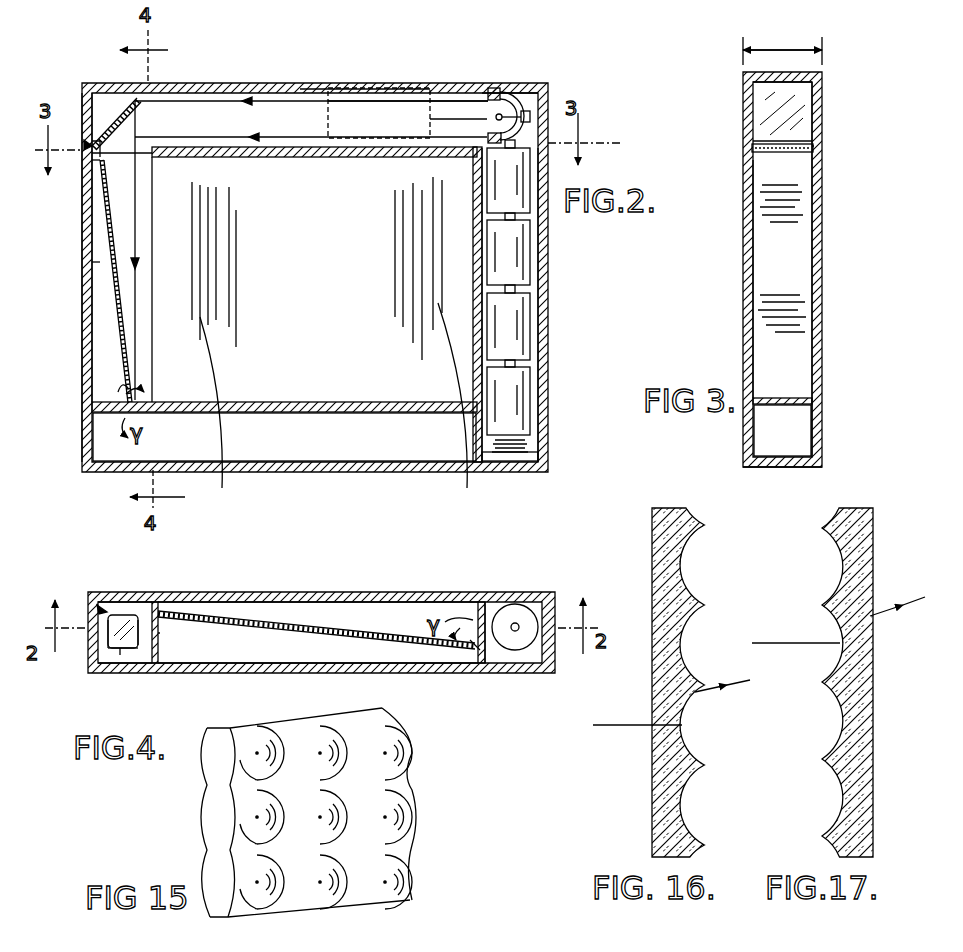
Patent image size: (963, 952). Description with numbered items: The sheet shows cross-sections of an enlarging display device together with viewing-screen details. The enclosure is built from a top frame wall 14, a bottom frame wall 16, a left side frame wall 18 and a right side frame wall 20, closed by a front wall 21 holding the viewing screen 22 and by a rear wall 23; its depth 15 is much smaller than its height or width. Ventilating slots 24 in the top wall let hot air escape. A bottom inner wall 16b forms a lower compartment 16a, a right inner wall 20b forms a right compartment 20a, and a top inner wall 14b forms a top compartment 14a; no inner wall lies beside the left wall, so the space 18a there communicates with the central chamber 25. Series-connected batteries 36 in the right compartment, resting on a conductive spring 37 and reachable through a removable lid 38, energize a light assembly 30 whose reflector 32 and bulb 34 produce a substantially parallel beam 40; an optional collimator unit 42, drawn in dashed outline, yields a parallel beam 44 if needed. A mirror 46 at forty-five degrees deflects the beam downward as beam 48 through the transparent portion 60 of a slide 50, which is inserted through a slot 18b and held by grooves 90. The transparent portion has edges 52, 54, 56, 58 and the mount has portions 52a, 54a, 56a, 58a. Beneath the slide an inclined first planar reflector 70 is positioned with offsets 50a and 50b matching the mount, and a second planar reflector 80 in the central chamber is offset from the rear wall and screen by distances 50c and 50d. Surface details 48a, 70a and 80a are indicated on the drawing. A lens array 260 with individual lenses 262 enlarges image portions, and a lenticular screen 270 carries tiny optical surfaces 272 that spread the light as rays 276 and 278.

In FIG. 2, the top frame wall 14 is at (393, 83).
In FIG. 3, the top frame wall 14 is at (820, 74).
In FIG. 2, the top elongated compartment 14a is at (313, 90).
In FIG. 2, the top inner wall 14b is at (225, 147).
In FIG. 3, the depth 15 is at (783, 48).
In FIG. 2, the bottom frame wall 16 is at (335, 462).
In FIG. 3, the bottom frame wall 16 is at (793, 458).
In FIG. 2, the lower elongated compartment 16a is at (368, 437).
In FIG. 3, the lower elongated compartment 16a is at (788, 433).
In FIG. 2, the bottom inner wall 16b is at (282, 412).
In FIG. 3, the bottom inner wall 16b is at (788, 405).
In FIG. 2, the left side frame wall 18 is at (88, 262).
In FIG. 2, the space adjacent left wall 18a is at (108, 322).
In FIG. 2, the slot 18b is at (82, 157).
In FIG. 3, the slot 18b is at (783, 141).
In FIG. 2, the right side frame wall 20 is at (536, 304).
In FIG. 2, the right compartment 20a is at (533, 362).
In FIG. 2, the right inner wall 20b is at (542, 270).
In FIG. 4, the right inner wall 20b is at (475, 617).
In FIG. 3, the front wall 21 is at (747, 105).
In FIG. 4, the front wall 21 is at (528, 660).
In FIG. 3, the viewing screen 22 is at (752, 302).
In FIG. 4, the viewing screen 22 is at (277, 664).
In FIG. 3, the rear wall 23 is at (815, 243).
In FIG. 4, the rear wall 23 is at (335, 596).
In FIG. 2, the air cooling slots 24 is at (510, 82).
In FIG. 4, the central chamber 25 is at (372, 613).
In FIG. 2, the light assembly 30 is at (519, 95).
In FIG. 2, the reflector 32 is at (522, 100).
In FIG. 2, the bulb 34 is at (496, 117).
In FIG. 2, the batteries 36 is at (508, 238).
In FIG. 4, the batteries 36 is at (515, 611).
In FIG. 2, the conductive spring 37 is at (535, 443).
In FIG. 2, the removable lid 38 is at (515, 463).
In FIG. 2, the parallel beam of light 40 is at (448, 120).
In FIG. 2, the collimator unit 42 is at (410, 100).
In FIG. 2, the parallel beam 44 is at (277, 123).
In FIG. 2, the mirror 46 is at (118, 143).
In FIG. 3, the mirror 46 is at (797, 122).
In FIG. 2, the reflected beam 48 is at (120, 147).
In FIG. 2, the support surface 48a is at (110, 270).
In FIG. 2, the slide 50 is at (80, 140).
In FIG. 3, the slide 50 is at (851, 171).
In FIG. 4, the slide 50 is at (104, 609).
In FIG. 2, the offset distance 50a is at (93, 187).
In FIG. 2, the lower offset distance 50b is at (122, 383).
In FIG. 4, the offset distance 50c is at (167, 599).
In FIG. 4, the offset distance 50d is at (475, 648).
In FIG. 4, the top edge of transparent portion 52 is at (91, 621).
In FIG. 4, the top mount portion 52a is at (250, 631).
In FIG. 4, the bottom edge of transparent portion 54 is at (142, 648).
In FIG. 4, the bottom mount portion 54a is at (143, 637).
In FIG. 4, the side edge of transparent portion 56 is at (117, 613).
In FIG. 4, the side mount portion 56a is at (125, 612).
In FIG. 4, the side edge of transparent portion 58 is at (122, 652).
In FIG. 4, the side mount portion 58a is at (127, 658).
In FIG. 4, the transparent portion 60 is at (102, 657).
In FIG. 2, the first planar reflector 70 is at (128, 356).
In FIG. 3, the first planar reflector 70 is at (788, 278).
In FIG. 3, the guide strip lines 70a is at (772, 207).
In FIG. 2, the second planar reflector 80 is at (425, 383).
In FIG. 4, the second planar reflector 80 is at (285, 621).
In FIG. 2, the plate edges 80a is at (345, 407).
In FIG. 3, the grooves 90 is at (750, 149).
In FIG. 15, the lens array 260 is at (175, 832).
In FIG. 15, the individual lenses 262 is at (402, 747).
In FIG. 16, the lenticular screen 270 is at (626, 774).
In FIG. 17, the lenticular screen 270 is at (895, 684).
In FIG. 16, the optical surfaces 272 is at (681, 570).
In FIG. 17, the optical surfaces 272 is at (840, 798).
In FIG. 16, the ray 276 is at (693, 698).
In FIG. 17, the ray 276 is at (872, 618).
In FIG. 16, the ray 278 is at (730, 682).
In FIG. 17, the ray 278 is at (925, 597).